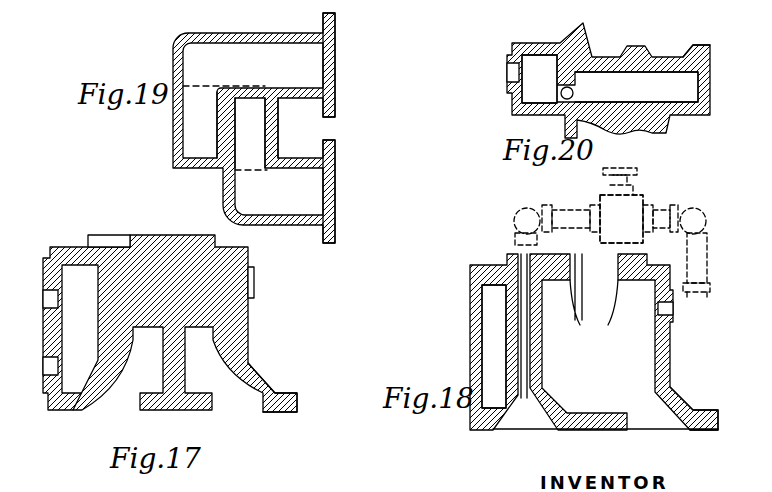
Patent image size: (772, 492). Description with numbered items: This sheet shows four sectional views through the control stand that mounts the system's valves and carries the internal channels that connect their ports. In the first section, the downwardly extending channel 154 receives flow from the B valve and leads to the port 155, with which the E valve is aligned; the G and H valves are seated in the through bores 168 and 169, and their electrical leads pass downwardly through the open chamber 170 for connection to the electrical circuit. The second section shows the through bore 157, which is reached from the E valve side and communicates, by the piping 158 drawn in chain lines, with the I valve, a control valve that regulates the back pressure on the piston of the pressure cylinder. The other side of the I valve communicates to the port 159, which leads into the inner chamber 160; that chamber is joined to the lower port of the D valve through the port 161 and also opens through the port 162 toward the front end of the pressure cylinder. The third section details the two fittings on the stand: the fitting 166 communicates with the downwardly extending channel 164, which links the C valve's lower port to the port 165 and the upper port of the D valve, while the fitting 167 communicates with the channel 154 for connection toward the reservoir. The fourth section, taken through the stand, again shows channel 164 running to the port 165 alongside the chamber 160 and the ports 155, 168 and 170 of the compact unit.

In FIG. 19, the downwardly extending channel 154 is at (182, 130).
In FIG. 17, the port 155 is at (107, 402).
In FIG. 20, the port 155 is at (598, 57).
In FIG. 20, the through bore 157 is at (559, 88).
In FIG. 18, the through bore 157 is at (527, 395).
In FIG. 18, the piping 158 is at (558, 210).
In FIG. 18, the port 159 is at (665, 308).
In FIG. 20, the inner chamber 160 is at (681, 98).
In FIG. 18, the inner chamber 160 is at (635, 382).
In FIG. 18, the port 161 is at (652, 415).
In FIG. 18, the port 162 is at (597, 272).
In FIG. 19, the downwardly extending channel 164 is at (250, 130).
In FIG. 17, the port 165 is at (237, 400).
In FIG. 20, the port 165 is at (670, 55).
In FIG. 19, the fitting 166 is at (328, 178).
In FIG. 19, the fitting 167 is at (330, 52).
In FIG. 17, the through bore 168 is at (63, 298).
In FIG. 20, the through bore 168 is at (510, 72).
In FIG. 17, the through bore 169 is at (60, 367).
In FIG. 17, the open chamber 170 is at (85, 285).
In FIG. 20, the open chamber 170 is at (530, 90).
In FIG. 18, the open chamber 170 is at (490, 312).
In FIG. 18, the I valve I is at (670, 178).